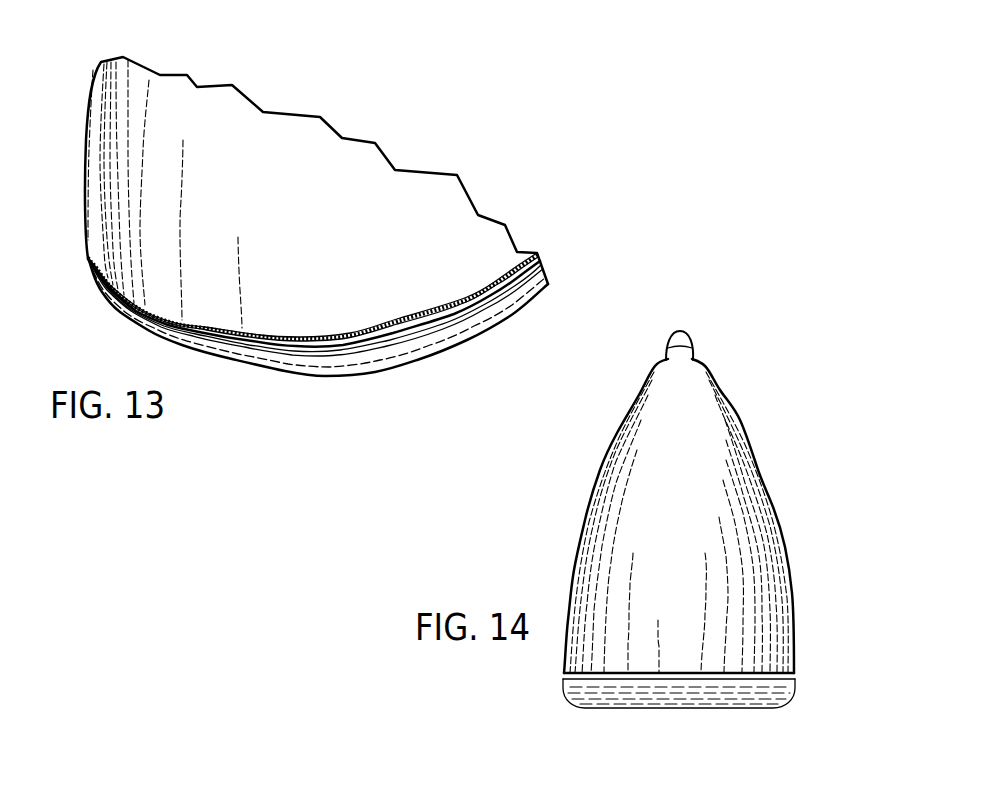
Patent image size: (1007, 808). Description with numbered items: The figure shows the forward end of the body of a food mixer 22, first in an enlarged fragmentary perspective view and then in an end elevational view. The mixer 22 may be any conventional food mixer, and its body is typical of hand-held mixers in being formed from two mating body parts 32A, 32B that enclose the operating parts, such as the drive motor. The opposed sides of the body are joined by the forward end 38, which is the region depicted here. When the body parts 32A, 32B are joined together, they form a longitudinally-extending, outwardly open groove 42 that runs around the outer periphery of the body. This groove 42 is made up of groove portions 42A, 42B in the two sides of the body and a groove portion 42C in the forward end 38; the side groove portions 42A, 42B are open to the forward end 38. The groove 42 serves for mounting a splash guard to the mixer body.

In FIG. 13, the mixer 22 is at (507, 162).
In FIG. 14, the mixer 22 is at (757, 360).
In FIG. 13, the body part 32A is at (372, 170).
In FIG. 14, the body part 32A is at (743, 470).
In FIG. 13, the body part 32B is at (400, 361).
In FIG. 14, the body part 32B is at (730, 708).
In FIG. 13, the forward end 38 is at (160, 228).
In FIG. 14, the forward end 38 is at (648, 600).
In FIG. 13, the groove 42 is at (465, 318).
In FIG. 13, the groove portion 42A is at (527, 248).
In FIG. 14, the groove portion 42A is at (797, 676).
In FIG. 14, the groove portion 42B is at (562, 676).
In FIG. 13, the groove portion 42C is at (258, 358).